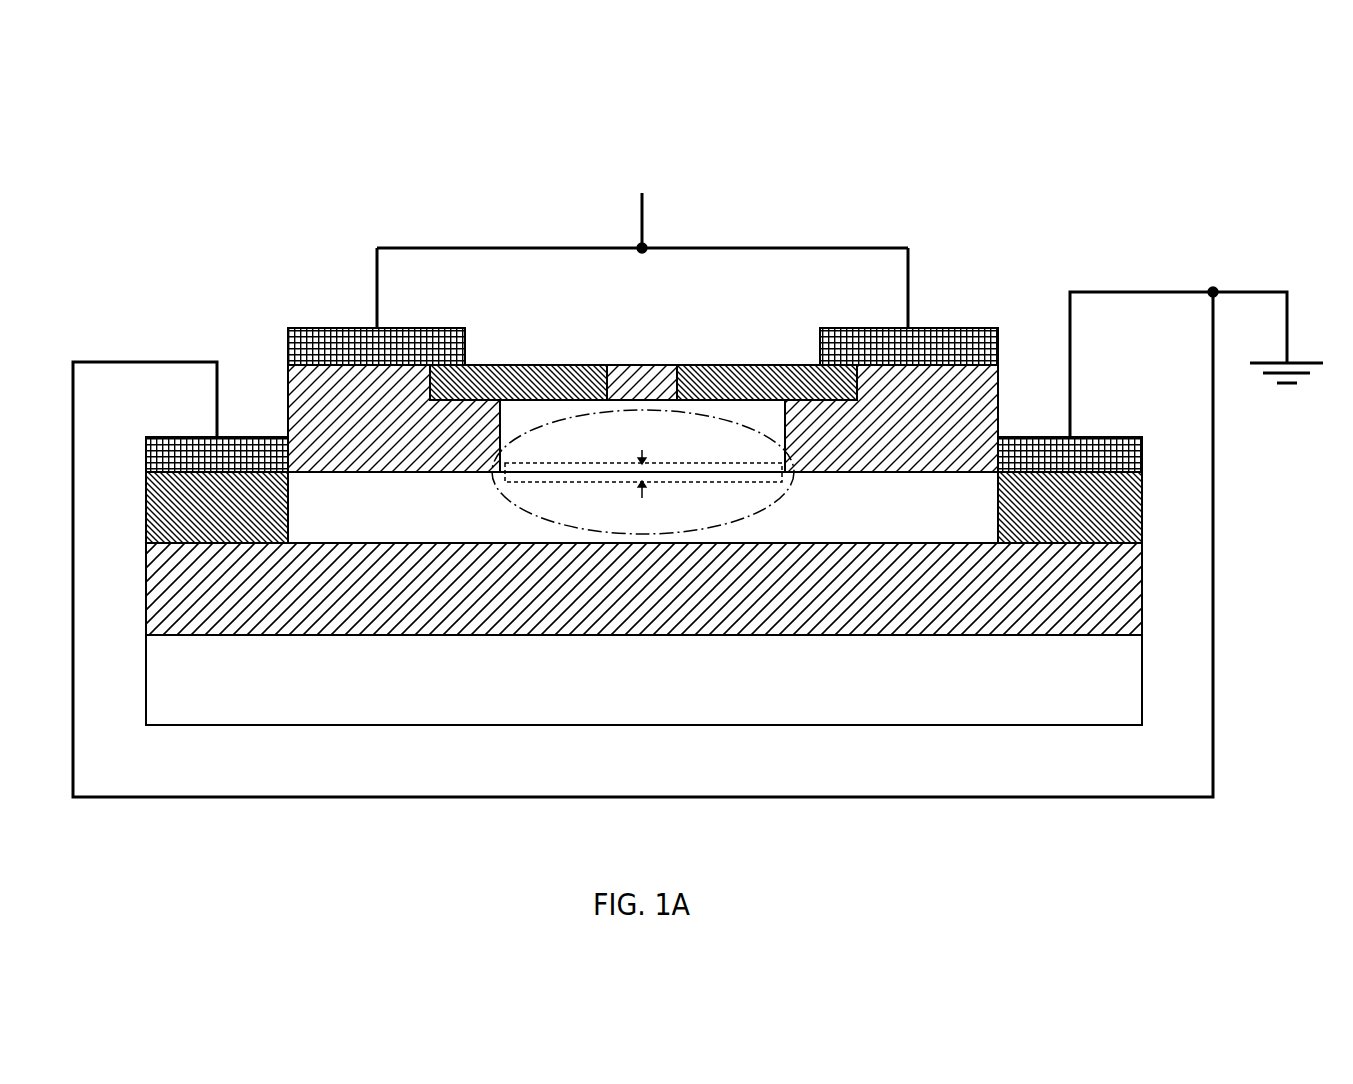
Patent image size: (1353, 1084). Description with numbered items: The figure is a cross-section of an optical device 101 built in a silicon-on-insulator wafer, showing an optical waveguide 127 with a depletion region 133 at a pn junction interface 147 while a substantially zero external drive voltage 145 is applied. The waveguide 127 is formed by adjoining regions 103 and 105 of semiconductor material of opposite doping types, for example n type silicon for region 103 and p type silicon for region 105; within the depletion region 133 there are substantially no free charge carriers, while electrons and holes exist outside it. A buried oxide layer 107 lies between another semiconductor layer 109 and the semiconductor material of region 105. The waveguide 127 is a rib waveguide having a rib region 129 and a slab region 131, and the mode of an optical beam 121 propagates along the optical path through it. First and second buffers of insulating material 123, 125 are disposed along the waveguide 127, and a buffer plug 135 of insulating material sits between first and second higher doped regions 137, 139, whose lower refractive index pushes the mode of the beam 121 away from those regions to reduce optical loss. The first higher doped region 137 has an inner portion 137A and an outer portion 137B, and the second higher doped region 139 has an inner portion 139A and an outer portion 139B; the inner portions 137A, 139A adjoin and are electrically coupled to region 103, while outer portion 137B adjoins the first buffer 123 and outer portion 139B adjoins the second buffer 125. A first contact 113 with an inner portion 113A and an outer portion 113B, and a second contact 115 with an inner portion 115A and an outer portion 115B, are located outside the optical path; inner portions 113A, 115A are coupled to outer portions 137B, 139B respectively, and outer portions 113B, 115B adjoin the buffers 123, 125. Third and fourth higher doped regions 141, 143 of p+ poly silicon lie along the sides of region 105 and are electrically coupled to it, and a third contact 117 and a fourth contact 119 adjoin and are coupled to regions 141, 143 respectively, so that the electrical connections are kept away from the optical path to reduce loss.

The optical device 101 is at (1102, 88).
The region of semiconductor material 103 is at (539, 426).
The region of semiconductor material 105 is at (479, 500).
The buried oxide layer 107 is at (1133, 603).
The semiconductor layer 109 is at (1133, 693).
The first contact 113 is at (362, 338).
The inner portion of first contact 113A is at (441, 340).
The outer portion of first contact 113B is at (311, 340).
The second contact 115 is at (930, 334).
The inner portion of second contact 115A is at (838, 342).
The outer portion of second contact 115B is at (974, 342).
The third contact 117 is at (188, 452).
The fourth contact 119 is at (1100, 452).
The optical beam 121 is at (793, 493).
The first buffer of insulating material 123 is at (312, 420).
The second buffer of insulating material 125 is at (973, 420).
The optical waveguide 127 is at (715, 408).
The rib region 129 is at (764, 426).
The slab region 131 is at (942, 508).
The depletion region 133 is at (640, 438).
The buffer plug 135 is at (640, 390).
The first higher doped region 137 is at (520, 387).
The inner portion of first higher doped region 137A is at (588, 390).
The outer portion of first higher doped region 137B is at (452, 385).
The second higher doped region 139 is at (774, 385).
The inner portion of second higher doped region 139A is at (690, 390).
The outer portion of second higher doped region 139B is at (830, 383).
The third higher doped region 141 is at (168, 520).
The fourth higher doped region 143 is at (1117, 520).
The external drive voltage 145 is at (601, 150).
The pn junction interface 147 is at (687, 473).